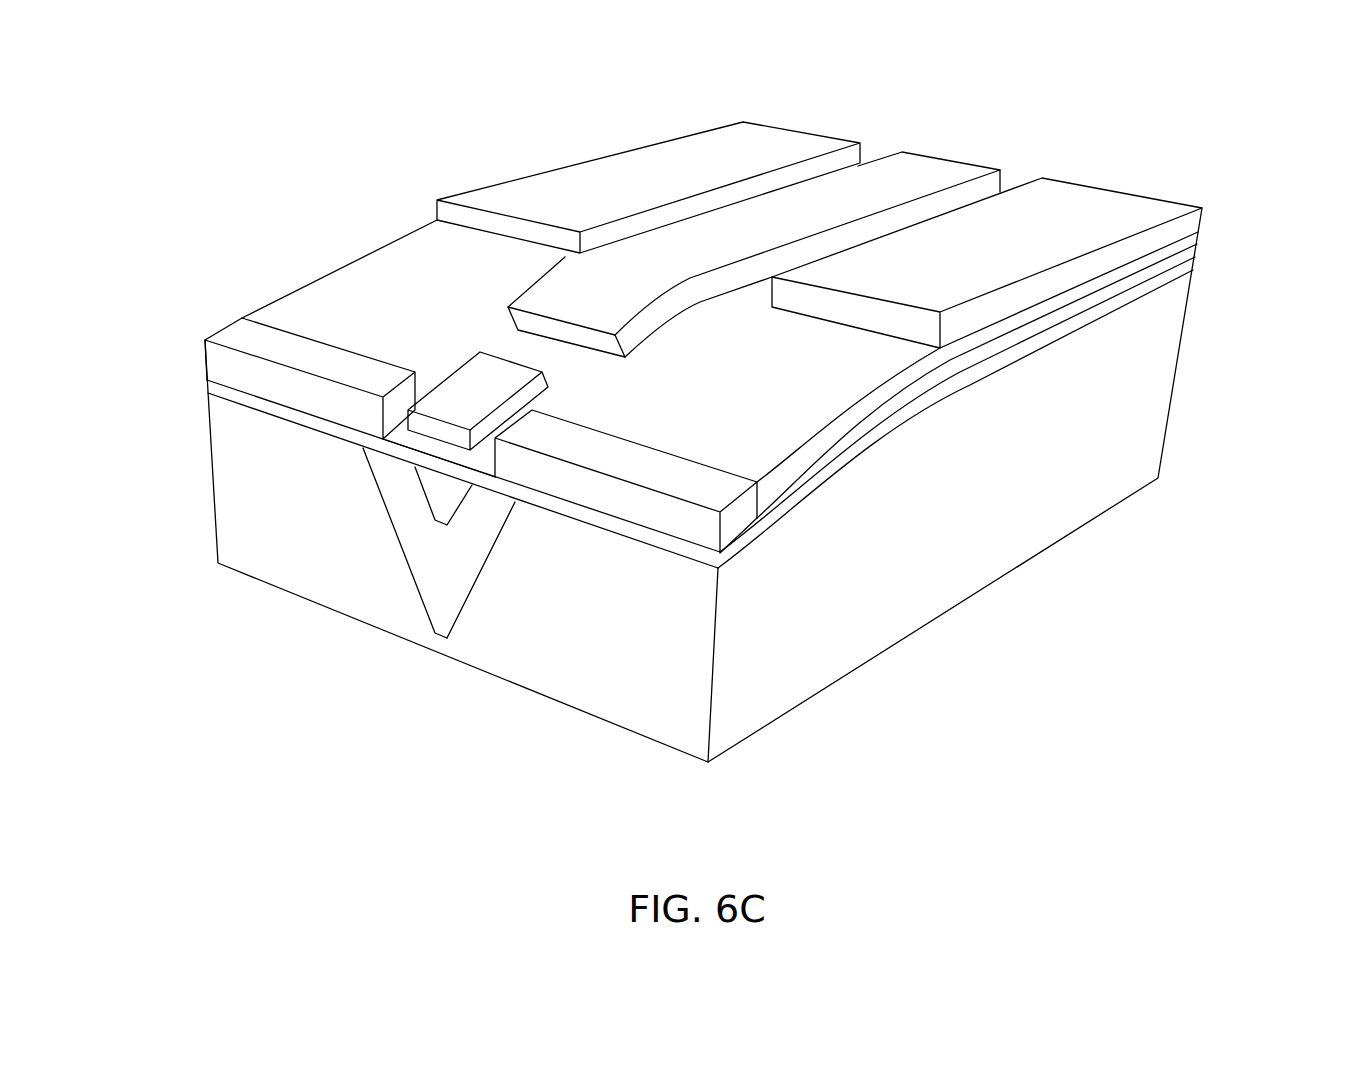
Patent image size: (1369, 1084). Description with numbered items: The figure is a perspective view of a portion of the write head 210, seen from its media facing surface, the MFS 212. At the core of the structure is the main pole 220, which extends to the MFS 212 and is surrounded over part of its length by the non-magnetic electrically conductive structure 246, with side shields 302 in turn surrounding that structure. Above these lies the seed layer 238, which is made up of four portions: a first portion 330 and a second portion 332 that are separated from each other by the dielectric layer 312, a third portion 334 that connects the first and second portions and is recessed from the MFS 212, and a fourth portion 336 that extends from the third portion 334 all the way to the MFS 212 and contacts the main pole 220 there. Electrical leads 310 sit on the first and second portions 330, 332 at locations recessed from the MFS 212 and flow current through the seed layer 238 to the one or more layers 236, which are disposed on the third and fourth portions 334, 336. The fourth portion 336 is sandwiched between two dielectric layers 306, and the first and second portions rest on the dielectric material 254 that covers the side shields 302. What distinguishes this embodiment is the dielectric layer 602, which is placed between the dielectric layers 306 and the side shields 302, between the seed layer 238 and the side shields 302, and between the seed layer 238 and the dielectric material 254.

The write head 210 is at (163, 117).
The MFS 212 is at (230, 427).
The main pole 220 is at (443, 505).
The one or more layers 236 is at (470, 380).
The seed layer 238 is at (403, 441).
The non-magnetic electrically conductive structure 246 is at (433, 547).
The dielectric material 254 is at (1180, 270).
The side shields 302 is at (242, 475).
The dielectric layers 306 is at (215, 362).
The electrical leads 310 is at (625, 165).
The dielectric layer 312 is at (935, 172).
The first portion 330 is at (455, 240).
The second portion 332 is at (873, 355).
The third portion 334 is at (540, 345).
The fourth portion 336 is at (487, 448).
The dielectric layer 602 is at (213, 388).